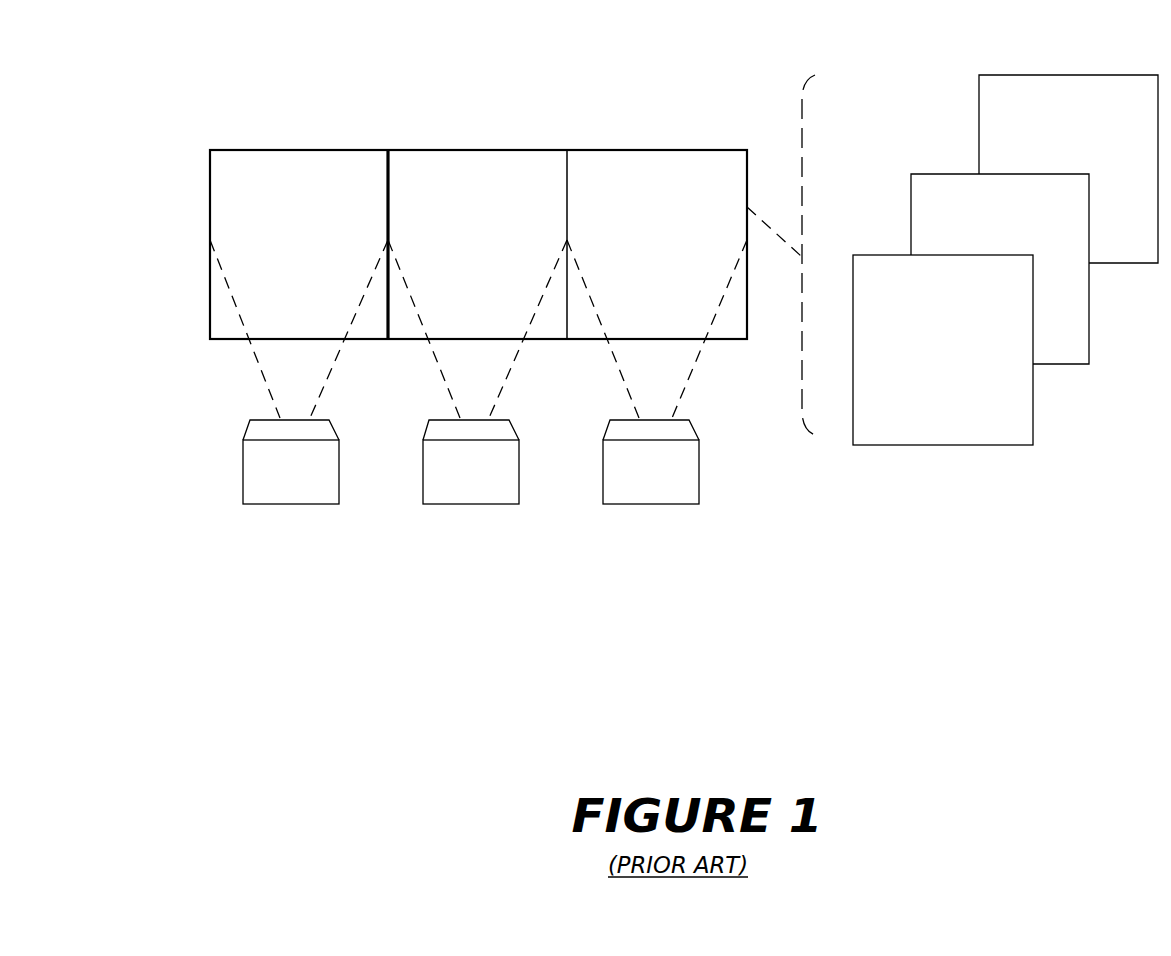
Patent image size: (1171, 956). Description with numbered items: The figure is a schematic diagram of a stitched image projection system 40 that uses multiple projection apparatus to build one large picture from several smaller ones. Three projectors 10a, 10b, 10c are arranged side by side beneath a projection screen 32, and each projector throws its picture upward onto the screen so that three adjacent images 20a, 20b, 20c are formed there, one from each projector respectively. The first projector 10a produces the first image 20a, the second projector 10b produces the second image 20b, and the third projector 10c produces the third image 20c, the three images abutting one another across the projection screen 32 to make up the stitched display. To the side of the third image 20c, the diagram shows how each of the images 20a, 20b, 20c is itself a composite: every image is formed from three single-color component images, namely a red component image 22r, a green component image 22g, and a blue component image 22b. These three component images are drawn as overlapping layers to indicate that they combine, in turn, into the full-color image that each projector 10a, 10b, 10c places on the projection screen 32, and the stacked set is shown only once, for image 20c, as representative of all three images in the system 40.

The stitched image projection system 40 is at (160, 46).
The projection screen 32 is at (210, 200).
The image 20a is at (286, 150).
The image 20b is at (428, 150).
The image 20c is at (608, 150).
The projector 10a is at (243, 490).
The projector 10b is at (473, 502).
The projector 10c is at (632, 504).
The red component image 22r is at (980, 426).
The green component image 22g is at (1078, 314).
The blue component image 22b is at (1143, 224).